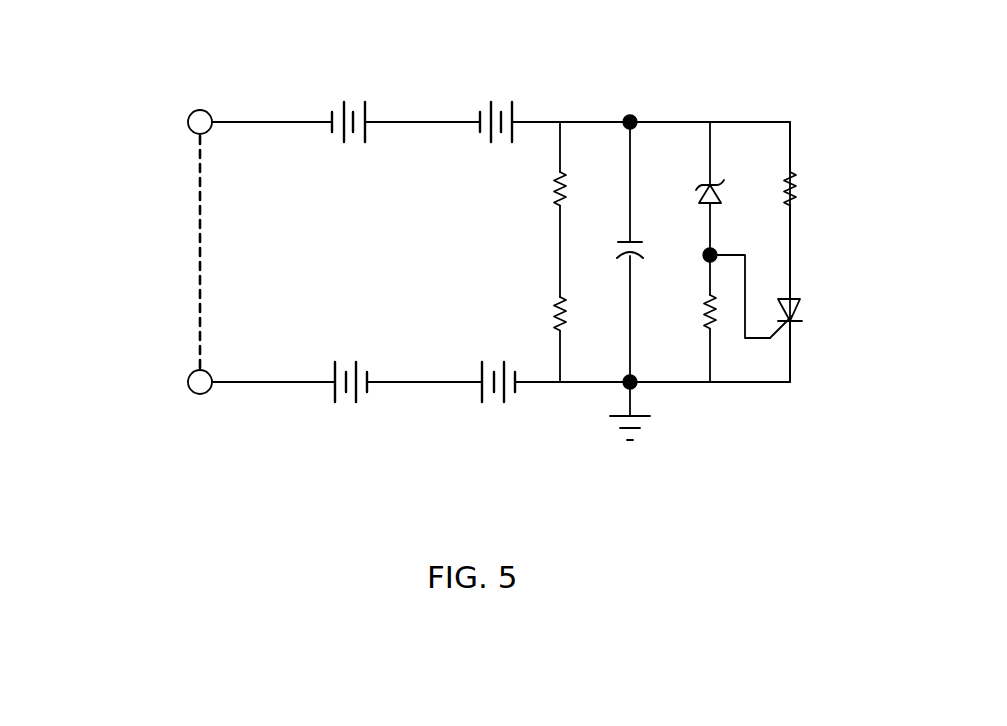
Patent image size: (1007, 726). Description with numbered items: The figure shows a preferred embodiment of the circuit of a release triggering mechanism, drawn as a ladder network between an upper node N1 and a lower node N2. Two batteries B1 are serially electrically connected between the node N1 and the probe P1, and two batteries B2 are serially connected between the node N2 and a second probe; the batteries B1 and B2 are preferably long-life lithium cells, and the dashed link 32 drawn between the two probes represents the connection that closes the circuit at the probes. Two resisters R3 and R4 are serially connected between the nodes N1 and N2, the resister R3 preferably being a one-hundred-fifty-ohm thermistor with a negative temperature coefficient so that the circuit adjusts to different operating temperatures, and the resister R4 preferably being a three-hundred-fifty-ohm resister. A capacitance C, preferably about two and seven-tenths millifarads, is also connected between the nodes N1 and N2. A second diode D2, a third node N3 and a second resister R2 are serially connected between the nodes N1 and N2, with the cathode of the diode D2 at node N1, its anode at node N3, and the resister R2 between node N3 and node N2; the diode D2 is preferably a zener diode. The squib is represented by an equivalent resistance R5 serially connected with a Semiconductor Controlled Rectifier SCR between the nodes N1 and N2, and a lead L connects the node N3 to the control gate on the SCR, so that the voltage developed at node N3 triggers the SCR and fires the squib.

The probe P1 is at (197, 118).
The external connection (dashed link between pins) 32 is at (197, 253).
The batteries B1 is at (343, 113).
The batteries B2 is at (335, 378).
The node N1 is at (634, 117).
The node N2 is at (624, 388).
The third node N3 is at (713, 252).
The second resister R2 is at (707, 315).
The resister R3 is at (557, 190).
The resister R4 is at (557, 313).
The equivalent resistance R5 is at (794, 190).
The capacitance C is at (626, 243).
The second diode D2 is at (708, 208).
The Semiconductor Controlled Rectifier SCR is at (788, 303).
The lead L is at (745, 318).